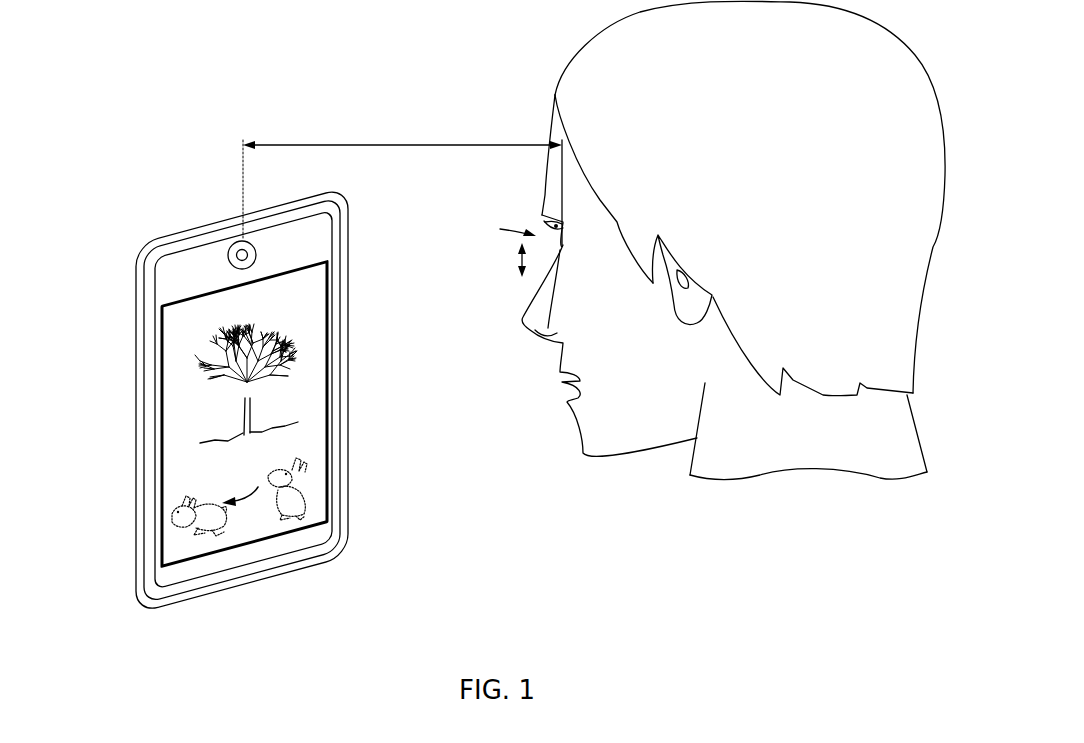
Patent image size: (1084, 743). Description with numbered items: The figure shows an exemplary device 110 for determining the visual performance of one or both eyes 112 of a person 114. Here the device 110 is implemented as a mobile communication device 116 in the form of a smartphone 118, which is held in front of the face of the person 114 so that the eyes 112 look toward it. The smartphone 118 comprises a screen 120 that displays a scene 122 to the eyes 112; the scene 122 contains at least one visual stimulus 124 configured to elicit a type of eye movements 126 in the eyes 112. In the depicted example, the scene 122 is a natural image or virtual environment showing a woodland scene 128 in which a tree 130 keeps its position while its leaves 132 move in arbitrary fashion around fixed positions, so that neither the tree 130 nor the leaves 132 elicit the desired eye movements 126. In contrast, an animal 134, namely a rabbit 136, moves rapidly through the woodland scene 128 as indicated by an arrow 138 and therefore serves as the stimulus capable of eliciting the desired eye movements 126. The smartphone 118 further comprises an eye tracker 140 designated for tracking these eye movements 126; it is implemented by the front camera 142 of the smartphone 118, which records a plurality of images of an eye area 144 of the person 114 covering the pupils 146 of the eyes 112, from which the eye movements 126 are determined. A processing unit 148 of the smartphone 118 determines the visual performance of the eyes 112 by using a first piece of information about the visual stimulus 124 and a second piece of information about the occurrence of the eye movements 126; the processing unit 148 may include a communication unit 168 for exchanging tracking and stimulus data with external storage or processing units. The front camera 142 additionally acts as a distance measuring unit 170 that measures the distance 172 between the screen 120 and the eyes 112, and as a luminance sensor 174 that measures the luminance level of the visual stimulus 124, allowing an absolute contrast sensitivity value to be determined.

The device 110 is at (299, 406).
The eyes 112 is at (551, 232).
The person 114 is at (752, 176).
The mobile communication device 116 is at (299, 406).
The smartphone 118 is at (299, 406).
The screen 120 is at (282, 455).
The scene 122 is at (282, 455).
The visual stimulus 124 is at (278, 553).
The eye movements 126 is at (519, 260).
The woodland scene 128 is at (302, 328).
The tree 130 is at (193, 372).
The leaves 132 is at (190, 348).
The animal 134 is at (278, 553).
The rabbit 136 is at (217, 524).
The arrow 138 is at (258, 487).
The eye tracker 140 is at (350, 216).
The front camera 142 is at (350, 216).
The eye area 144 is at (500, 229).
The pupils 146 is at (567, 240).
The processing unit 148 is at (197, 400).
The communication unit 168 is at (140, 435).
The distance measuring unit 170 is at (350, 216).
The distance 172 is at (401, 145).
The luminance sensor 174 is at (257, 254).